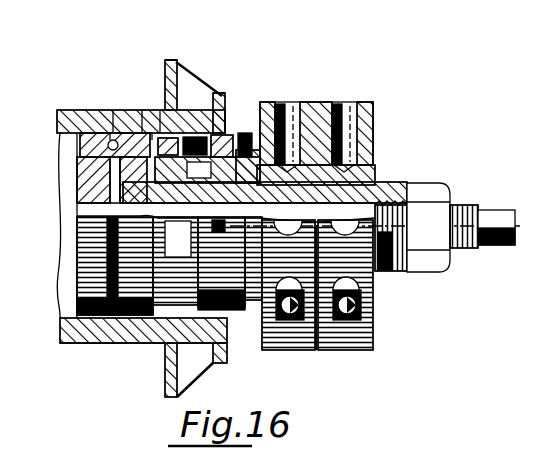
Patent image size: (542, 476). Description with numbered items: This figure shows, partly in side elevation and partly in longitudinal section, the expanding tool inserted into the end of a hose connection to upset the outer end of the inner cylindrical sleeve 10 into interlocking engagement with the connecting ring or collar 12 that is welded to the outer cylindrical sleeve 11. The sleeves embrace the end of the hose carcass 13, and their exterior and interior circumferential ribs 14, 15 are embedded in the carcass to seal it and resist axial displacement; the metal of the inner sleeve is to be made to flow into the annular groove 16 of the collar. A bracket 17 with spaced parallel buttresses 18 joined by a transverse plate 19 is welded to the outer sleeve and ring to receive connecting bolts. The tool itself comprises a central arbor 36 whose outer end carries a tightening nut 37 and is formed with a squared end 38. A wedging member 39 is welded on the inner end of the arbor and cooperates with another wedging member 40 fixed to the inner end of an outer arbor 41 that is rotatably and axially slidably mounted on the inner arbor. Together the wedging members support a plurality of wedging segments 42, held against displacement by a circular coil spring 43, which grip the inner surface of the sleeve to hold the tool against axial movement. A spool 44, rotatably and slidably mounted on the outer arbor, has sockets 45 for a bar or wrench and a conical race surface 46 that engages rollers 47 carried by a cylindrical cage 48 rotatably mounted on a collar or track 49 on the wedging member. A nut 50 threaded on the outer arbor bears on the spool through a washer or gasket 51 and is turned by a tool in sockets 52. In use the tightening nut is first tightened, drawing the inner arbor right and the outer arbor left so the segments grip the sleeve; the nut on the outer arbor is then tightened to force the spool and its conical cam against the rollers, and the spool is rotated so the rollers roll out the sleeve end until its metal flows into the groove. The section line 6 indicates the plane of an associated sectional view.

The section line 6 is at (255, 180).
The inner cylindrical sleeve 10 is at (86, 142).
The outer cylindrical sleeve 11 is at (113, 110).
The connecting ring or collar 12 is at (217, 97).
The hose carcass 13 is at (72, 110).
The exterior circumferential ribs 14 is at (142, 110).
The interior circumferential ribs 15 is at (160, 110).
The annular groove 16 is at (214, 100).
The bracket 17 is at (166, 70).
The buttress 18 is at (178, 62).
The transverse plate 19 is at (169, 60).
The central arbor 36 is at (380, 198).
The tightening nut 37 is at (420, 185).
The squared end 38 is at (486, 212).
The wedging member 39 is at (77, 180).
The wedging member 40 is at (113, 112).
The outer arbor 41 is at (157, 218).
The wedging segments 42 is at (95, 344).
The circular coil spring 43 is at (110, 345).
The spool 44 is at (264, 103).
The sockets 45 is at (293, 105).
The conical race surface 46 is at (250, 140).
The rollers 47 is at (212, 230).
The cylindrical cage 48 is at (153, 112).
The collar or track 49 is at (178, 160).
The nut 50 is at (355, 350).
The washer or gasket 51 is at (303, 350).
The sockets 52 is at (373, 314).